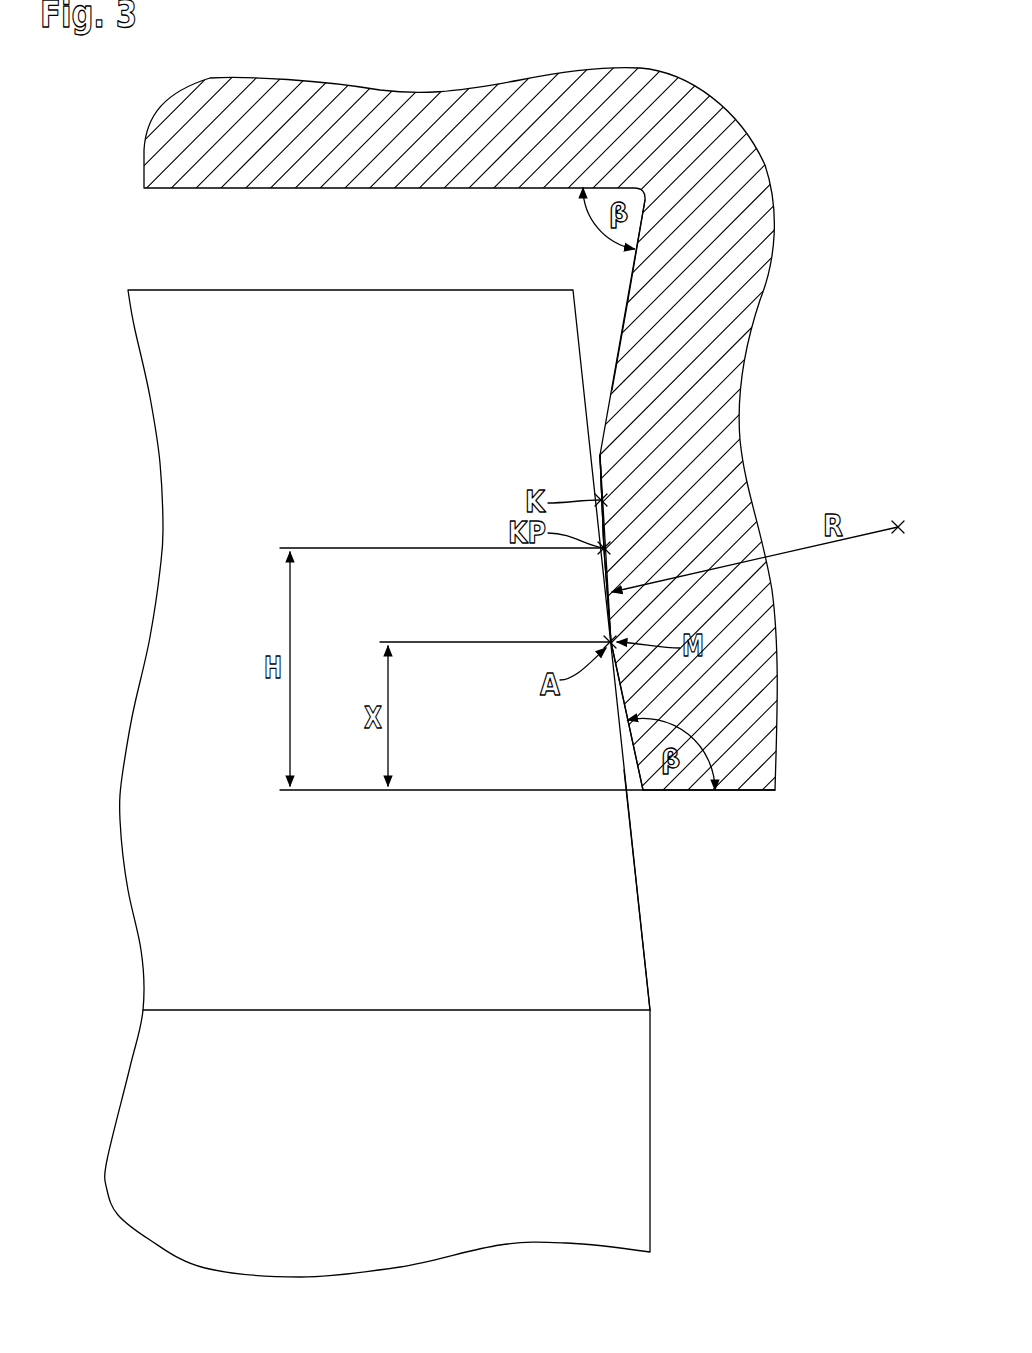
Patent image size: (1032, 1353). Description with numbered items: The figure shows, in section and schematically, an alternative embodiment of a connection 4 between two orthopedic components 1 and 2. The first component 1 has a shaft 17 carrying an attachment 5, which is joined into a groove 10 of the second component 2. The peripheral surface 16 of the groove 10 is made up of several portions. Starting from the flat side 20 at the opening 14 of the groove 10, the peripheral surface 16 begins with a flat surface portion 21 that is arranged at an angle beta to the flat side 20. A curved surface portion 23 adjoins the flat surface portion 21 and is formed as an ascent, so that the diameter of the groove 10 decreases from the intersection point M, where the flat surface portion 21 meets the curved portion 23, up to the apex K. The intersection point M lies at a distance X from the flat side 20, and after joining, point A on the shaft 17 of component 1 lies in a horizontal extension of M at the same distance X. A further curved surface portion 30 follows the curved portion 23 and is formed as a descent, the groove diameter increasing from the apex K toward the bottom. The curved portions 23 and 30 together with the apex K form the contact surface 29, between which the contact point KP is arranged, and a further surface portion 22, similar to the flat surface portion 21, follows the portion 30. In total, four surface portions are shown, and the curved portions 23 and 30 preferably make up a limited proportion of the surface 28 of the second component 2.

The first component 1 is at (714, 1238).
The second component 2 is at (447, 151).
The connection arrangement 4 is at (834, 479).
The attachment 5 is at (265, 410).
The groove 10 is at (279, 257).
The opening 14 is at (640, 808).
The peripheral surface 16 is at (633, 271).
The shaft 17 is at (680, 1166).
The flat side 20 is at (740, 794).
The flat surface portion 21 is at (629, 705).
The further surface portion 22 is at (629, 300).
The curved surface portion 23 is at (611, 616).
The surface 28 is at (601, 453).
The contact surface 29 is at (605, 548).
The further curved surface portion 30 is at (602, 502).